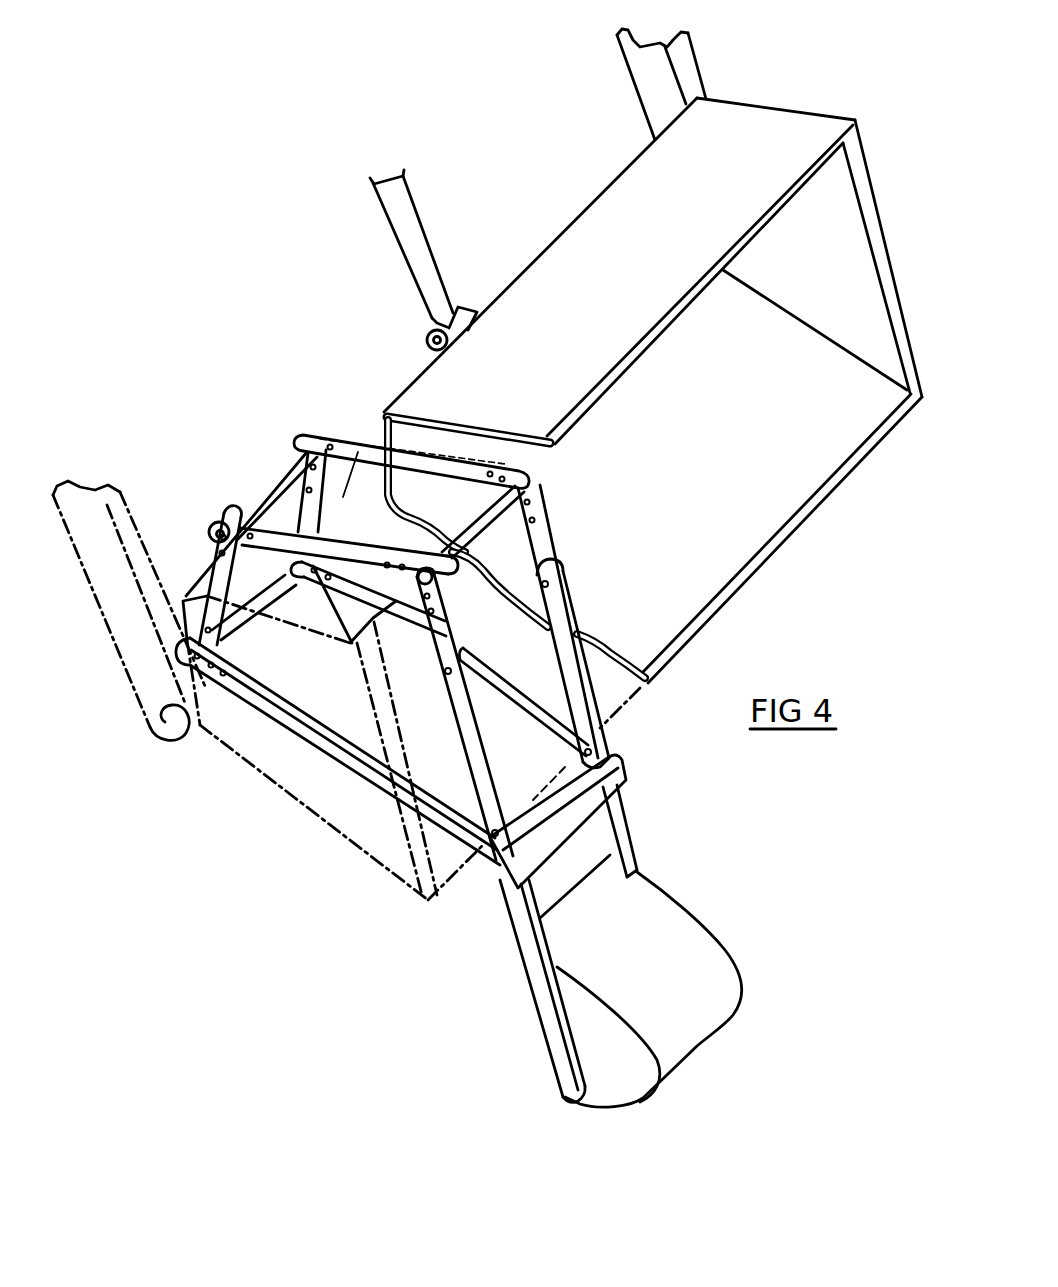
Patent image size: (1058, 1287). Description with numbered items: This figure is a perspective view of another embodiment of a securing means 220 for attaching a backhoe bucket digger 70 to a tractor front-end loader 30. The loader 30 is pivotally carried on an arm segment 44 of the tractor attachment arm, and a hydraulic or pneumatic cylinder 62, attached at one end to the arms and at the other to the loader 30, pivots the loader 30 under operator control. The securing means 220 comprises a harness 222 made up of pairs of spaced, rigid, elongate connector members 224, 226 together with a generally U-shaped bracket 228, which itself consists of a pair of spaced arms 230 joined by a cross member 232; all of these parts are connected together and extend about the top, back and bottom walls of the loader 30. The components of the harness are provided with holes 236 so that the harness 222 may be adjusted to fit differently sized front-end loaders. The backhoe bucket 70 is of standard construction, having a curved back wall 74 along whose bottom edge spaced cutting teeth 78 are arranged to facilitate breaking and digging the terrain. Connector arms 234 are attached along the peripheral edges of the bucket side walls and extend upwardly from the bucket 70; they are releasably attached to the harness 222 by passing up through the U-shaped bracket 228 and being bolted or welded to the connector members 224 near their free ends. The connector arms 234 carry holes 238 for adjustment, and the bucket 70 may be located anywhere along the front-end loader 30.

The front-end loader 30 is at (808, 525).
The arm segment 44 is at (700, 60).
The hydraulic or pneumatic cylinder 62 is at (427, 225).
The backhoe bucket digger 70 is at (718, 933).
The back wall 74 is at (664, 987).
The cutting teeth 78 is at (543, 1100).
The securing means 220 is at (580, 599).
The harness 222 is at (298, 433).
The connector members 224 is at (357, 437).
The connector members 226 is at (301, 500).
The U-shaped bracket 228 is at (280, 735).
The arms 230 is at (337, 603).
The cross member 232 is at (584, 807).
The connector arms 234 is at (630, 829).
The holes 236 is at (500, 478).
The holes 238 is at (540, 502).